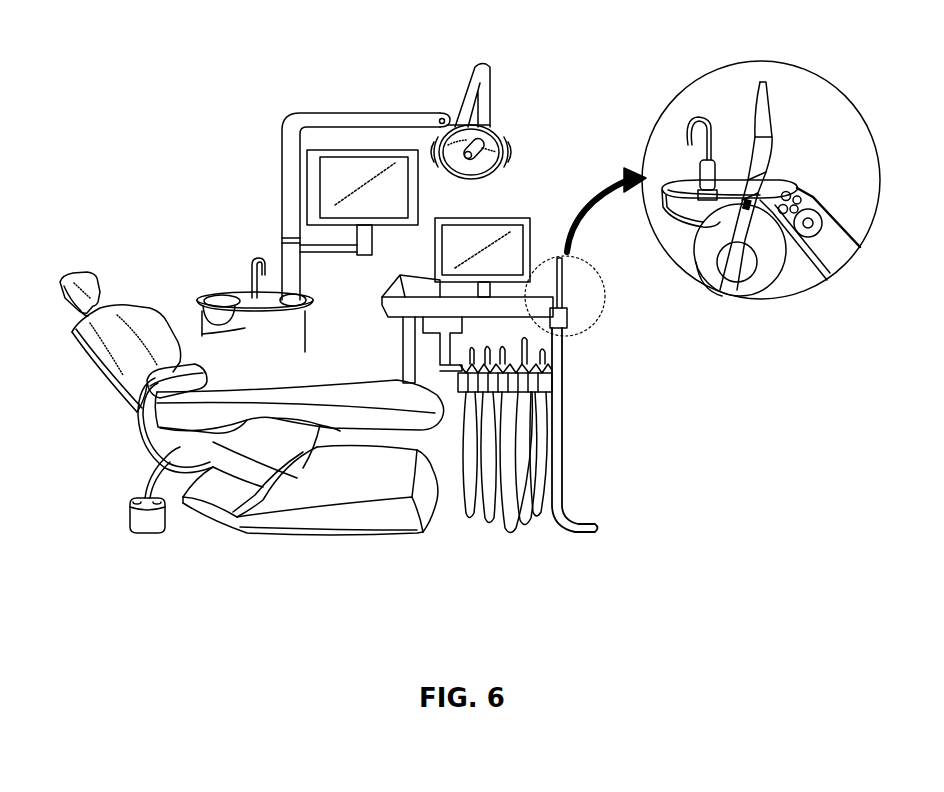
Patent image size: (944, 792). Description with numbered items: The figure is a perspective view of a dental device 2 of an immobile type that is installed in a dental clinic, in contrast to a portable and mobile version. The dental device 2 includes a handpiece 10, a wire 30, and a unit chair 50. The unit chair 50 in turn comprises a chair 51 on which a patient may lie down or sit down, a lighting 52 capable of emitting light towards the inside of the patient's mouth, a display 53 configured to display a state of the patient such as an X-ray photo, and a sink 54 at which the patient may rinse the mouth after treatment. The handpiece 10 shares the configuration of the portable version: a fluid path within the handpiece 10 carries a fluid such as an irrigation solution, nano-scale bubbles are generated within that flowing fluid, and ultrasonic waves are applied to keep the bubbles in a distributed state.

The dental device 2 is at (312, 27).
The handpiece 10 is at (567, 286).
The wire 30 is at (563, 432).
The unit chair 50 is at (163, 285).
The chair 51 is at (116, 364).
The lighting 52 is at (498, 133).
The display 53 is at (365, 150).
The sink 54 is at (222, 297).